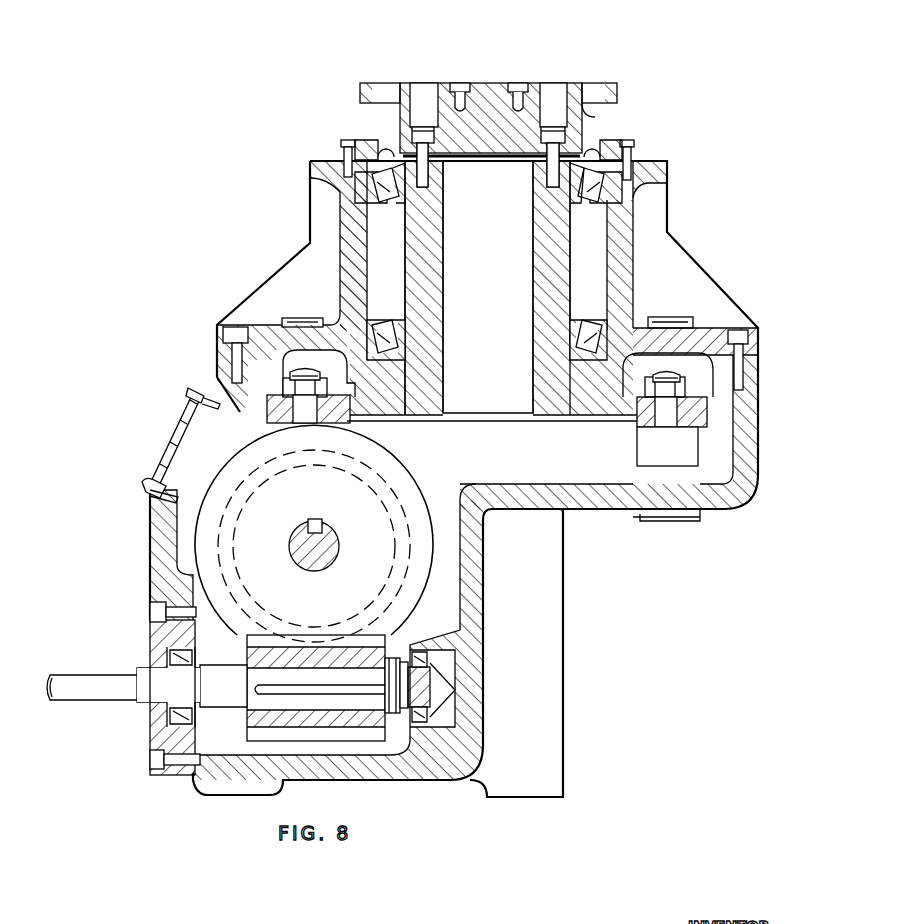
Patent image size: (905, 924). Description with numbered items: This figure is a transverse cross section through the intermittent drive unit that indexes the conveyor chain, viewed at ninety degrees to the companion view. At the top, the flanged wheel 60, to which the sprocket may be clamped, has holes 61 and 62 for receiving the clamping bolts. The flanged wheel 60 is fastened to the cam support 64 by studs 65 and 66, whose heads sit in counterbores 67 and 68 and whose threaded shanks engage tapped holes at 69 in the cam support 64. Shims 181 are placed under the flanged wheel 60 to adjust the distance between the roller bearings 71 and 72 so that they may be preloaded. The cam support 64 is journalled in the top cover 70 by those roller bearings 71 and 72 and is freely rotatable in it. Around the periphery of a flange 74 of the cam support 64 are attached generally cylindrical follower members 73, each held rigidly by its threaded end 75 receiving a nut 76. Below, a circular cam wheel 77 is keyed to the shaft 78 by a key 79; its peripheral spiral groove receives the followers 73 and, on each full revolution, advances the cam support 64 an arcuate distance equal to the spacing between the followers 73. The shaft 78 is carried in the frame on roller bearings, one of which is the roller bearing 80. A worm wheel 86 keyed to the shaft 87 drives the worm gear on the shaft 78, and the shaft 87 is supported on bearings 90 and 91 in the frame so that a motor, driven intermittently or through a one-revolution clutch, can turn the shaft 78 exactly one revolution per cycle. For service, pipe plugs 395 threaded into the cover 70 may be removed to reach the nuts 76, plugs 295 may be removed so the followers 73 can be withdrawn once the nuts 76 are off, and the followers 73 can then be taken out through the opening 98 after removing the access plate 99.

The flanged wheel 60 is at (482, 111).
The hole 61 is at (605, 84).
The hole 62 is at (382, 84).
The cam support 64 is at (553, 413).
The stud 65 is at (562, 131).
The stud 66 is at (418, 133).
The counterbore 67 is at (423, 93).
The counterbore 68 is at (548, 90).
The tapped holes 69 is at (548, 172).
The top cover 70 is at (670, 162).
The roller bearing 71 is at (536, 207).
The roller bearing 72 is at (590, 340).
The follower member 73 is at (682, 457).
The flange 74 is at (703, 405).
The threaded end 75 is at (676, 378).
The nut 76 is at (697, 388).
The cam wheel 77 is at (413, 494).
The shaft 78 is at (337, 547).
The key 79 is at (321, 524).
The roller bearing 80 is at (386, 479).
The worm wheel 86 is at (262, 717).
The shaft 87 is at (109, 694).
The bearing 90 is at (421, 647).
The bearing 91 is at (157, 732).
The opening 98 is at (168, 491).
The access plate 99 is at (170, 450).
The shims 181 is at (590, 149).
The plug 295 is at (633, 516).
The pipe plug 395 is at (313, 317).